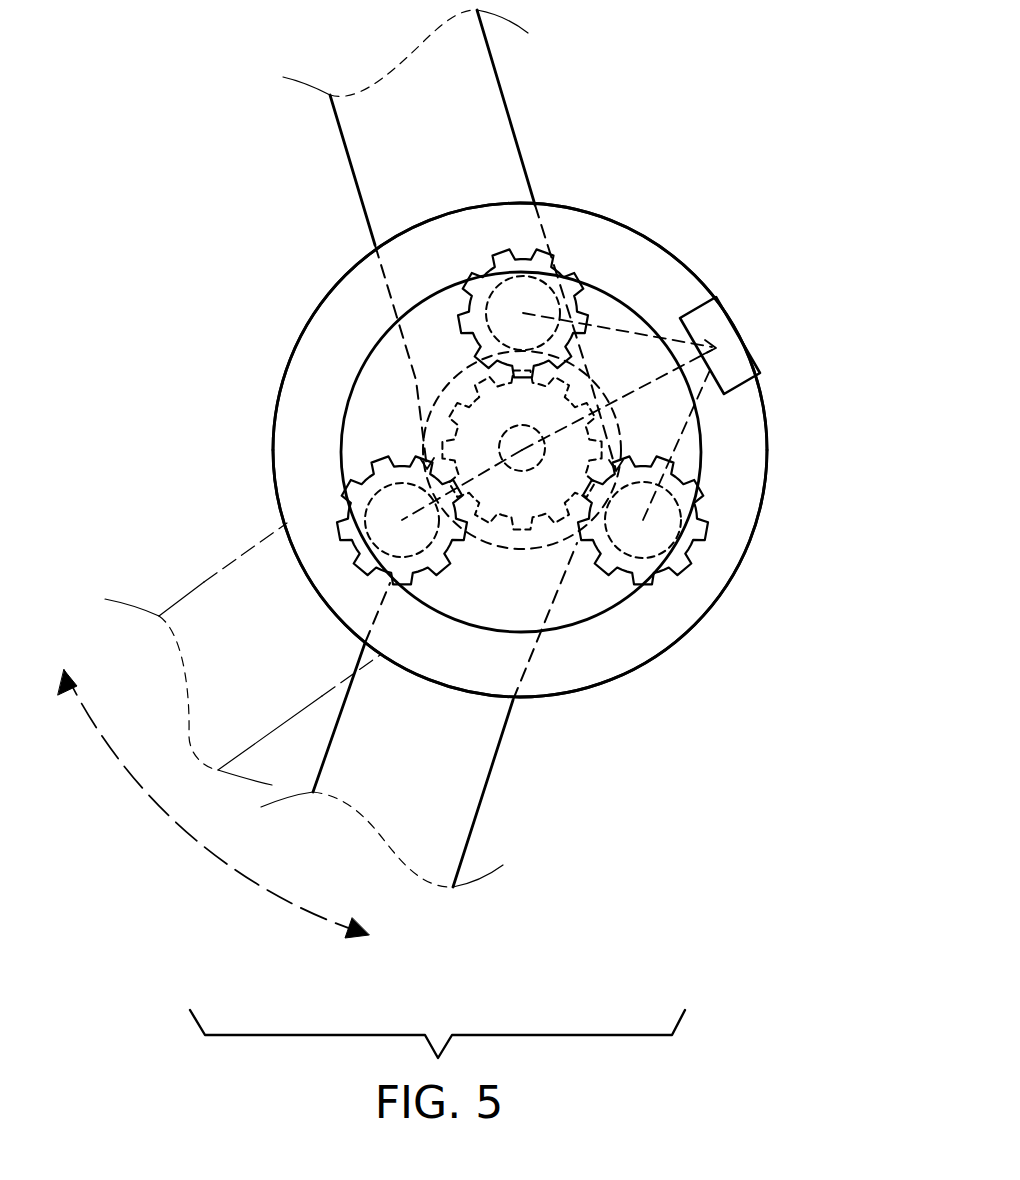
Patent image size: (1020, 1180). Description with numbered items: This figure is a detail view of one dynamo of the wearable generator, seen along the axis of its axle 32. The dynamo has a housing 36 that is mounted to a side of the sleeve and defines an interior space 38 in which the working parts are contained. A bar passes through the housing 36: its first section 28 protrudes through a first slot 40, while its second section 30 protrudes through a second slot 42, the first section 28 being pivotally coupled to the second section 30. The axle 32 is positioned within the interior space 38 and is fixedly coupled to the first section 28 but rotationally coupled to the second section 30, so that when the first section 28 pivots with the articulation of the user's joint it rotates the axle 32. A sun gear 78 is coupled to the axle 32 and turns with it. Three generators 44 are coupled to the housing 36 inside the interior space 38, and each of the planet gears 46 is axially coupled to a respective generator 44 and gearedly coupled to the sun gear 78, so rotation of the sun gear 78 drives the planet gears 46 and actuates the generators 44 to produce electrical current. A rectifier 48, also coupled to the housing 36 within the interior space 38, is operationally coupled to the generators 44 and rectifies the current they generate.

The first section 28 is at (380, 145).
The second section 30 is at (423, 788).
The axle 32 is at (525, 445).
The housing 36 is at (628, 232).
The interior space 38 is at (590, 597).
The first slot 40 is at (470, 210).
The second slot 42 is at (440, 687).
The generators 44 is at (523, 416).
The planet gears 46 is at (600, 525).
The rectifier 48 is at (733, 358).
The sun gear 78 is at (578, 453).